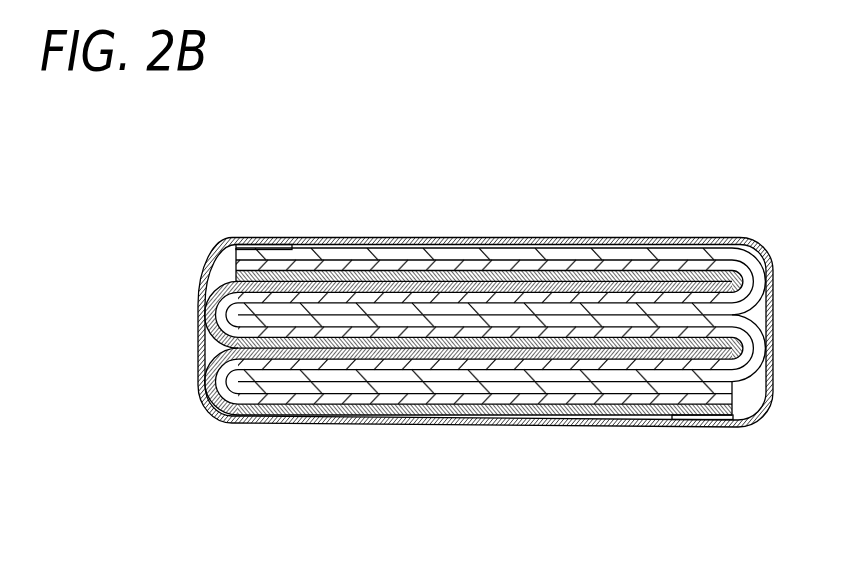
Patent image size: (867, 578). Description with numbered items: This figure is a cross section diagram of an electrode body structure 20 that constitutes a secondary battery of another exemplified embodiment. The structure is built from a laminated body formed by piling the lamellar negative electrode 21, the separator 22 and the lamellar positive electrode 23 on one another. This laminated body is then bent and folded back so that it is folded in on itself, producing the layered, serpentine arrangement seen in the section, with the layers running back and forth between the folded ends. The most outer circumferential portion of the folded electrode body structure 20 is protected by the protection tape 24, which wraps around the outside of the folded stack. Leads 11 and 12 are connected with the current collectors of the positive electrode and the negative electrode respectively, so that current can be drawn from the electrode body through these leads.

The electrode body structure 20 is at (369, 421).
The protection tape 24 is at (693, 247).
The lamellar negative electrode 21 is at (611, 250).
The separator 22 is at (543, 266).
The lamellar positive electrode 23 is at (443, 268).
The lead 12 is at (284, 242).
The lead 11 is at (689, 420).